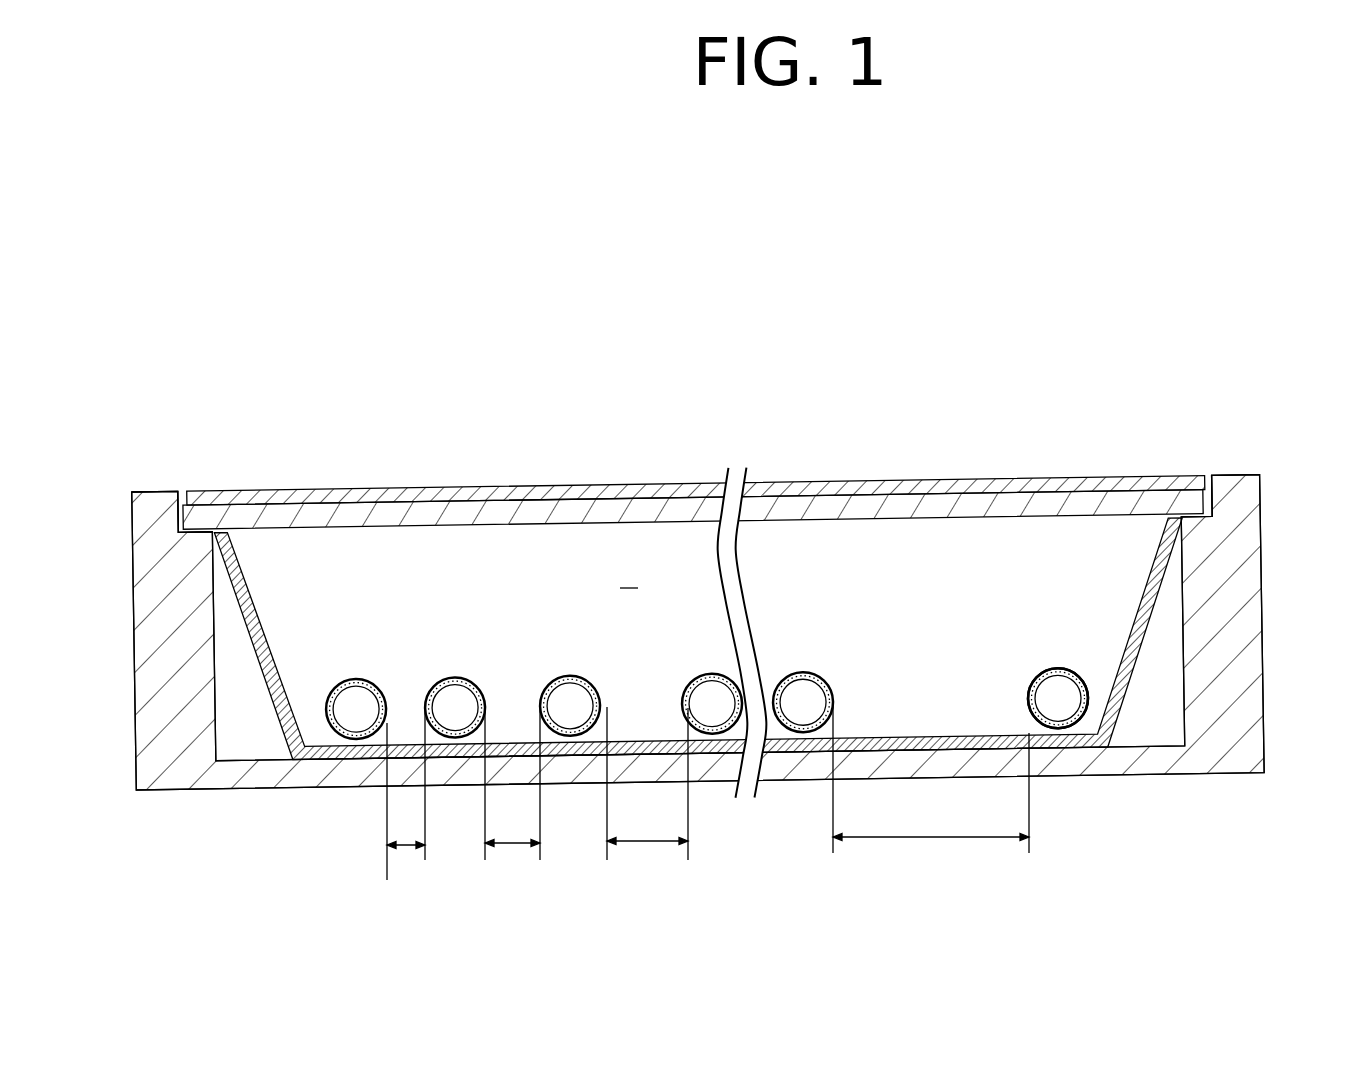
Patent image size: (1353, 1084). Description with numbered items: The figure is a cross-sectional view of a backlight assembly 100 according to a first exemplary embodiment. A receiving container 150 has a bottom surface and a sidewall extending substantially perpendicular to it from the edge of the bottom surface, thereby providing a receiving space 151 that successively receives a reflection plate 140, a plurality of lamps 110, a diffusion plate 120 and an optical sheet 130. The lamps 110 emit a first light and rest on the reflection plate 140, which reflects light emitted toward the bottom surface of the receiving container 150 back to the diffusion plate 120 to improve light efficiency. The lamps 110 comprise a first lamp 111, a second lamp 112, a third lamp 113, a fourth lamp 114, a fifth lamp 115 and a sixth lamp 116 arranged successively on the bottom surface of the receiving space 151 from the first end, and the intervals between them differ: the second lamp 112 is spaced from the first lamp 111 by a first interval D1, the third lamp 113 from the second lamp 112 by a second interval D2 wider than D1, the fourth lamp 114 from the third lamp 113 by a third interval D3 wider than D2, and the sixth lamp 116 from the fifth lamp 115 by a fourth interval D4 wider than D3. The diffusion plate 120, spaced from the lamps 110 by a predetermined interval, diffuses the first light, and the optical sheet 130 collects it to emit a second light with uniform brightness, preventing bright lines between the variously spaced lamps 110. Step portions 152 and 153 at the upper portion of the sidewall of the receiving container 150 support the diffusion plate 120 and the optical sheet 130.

The backlight assembly 100 is at (678, 307).
The lamps 110 is at (1084, 662).
The first lamp 111 is at (357, 680).
The second lamp 112 is at (452, 679).
The third lamp 113 is at (570, 677).
The fourth lamp 114 is at (700, 675).
The fifth lamp 115 is at (807, 674).
The sixth lamp 116 is at (1060, 669).
The diffusion plate 120 is at (1142, 500).
The optical sheet 130 is at (1065, 478).
The reflection plate 140 is at (1160, 577).
The receiving container 150 is at (1232, 692).
The receiving space 151 is at (627, 586).
The step portion 152 is at (137, 523).
The step portion 153 is at (1214, 500).
The first interval D1 is at (407, 802).
The second interval D2 is at (512, 801).
The third interval D3 is at (647, 800).
The fourth interval D4 is at (931, 793).